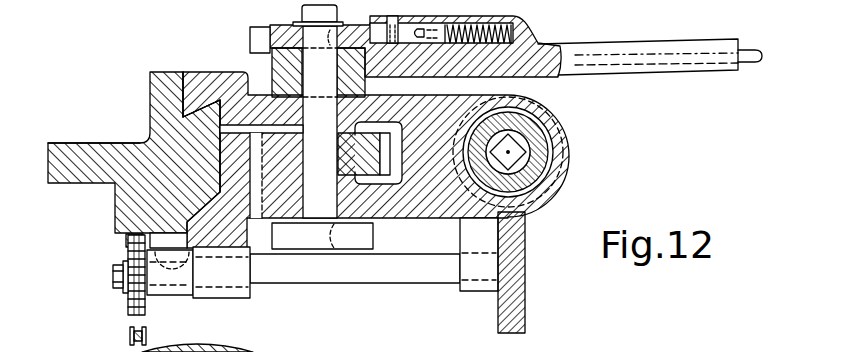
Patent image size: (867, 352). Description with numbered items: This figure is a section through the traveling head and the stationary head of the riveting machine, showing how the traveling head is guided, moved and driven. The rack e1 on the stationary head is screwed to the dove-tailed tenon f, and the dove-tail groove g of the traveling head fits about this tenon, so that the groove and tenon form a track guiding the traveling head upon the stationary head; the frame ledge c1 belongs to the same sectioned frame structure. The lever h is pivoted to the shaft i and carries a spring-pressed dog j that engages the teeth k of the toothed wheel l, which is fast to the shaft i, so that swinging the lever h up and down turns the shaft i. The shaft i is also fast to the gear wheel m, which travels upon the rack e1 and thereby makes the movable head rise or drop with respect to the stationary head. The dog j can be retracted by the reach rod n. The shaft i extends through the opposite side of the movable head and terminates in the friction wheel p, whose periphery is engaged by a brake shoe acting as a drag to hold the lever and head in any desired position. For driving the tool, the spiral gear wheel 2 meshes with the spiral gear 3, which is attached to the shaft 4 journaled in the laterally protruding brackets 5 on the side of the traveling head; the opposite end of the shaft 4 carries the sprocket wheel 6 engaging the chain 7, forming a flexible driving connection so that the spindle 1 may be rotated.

The dove-tailed tenon f is at (197, 138).
The frame ledge c1 is at (92, 129).
The dove-tail groove g is at (204, 100).
The teeth k is at (248, 37).
The toothed wheel l is at (272, 30).
The rack e1 is at (245, 157).
The shaft i is at (318, 111).
The spring-pressed dog j is at (398, 20).
The lever h is at (608, 33).
The reach rod n is at (753, 62).
The spindle 1 is at (518, 148).
The gear wheel 2 is at (573, 165).
The gear wheel m is at (376, 150).
The friction wheel p is at (362, 241).
The shaft 4 is at (436, 276).
The laterally protruding brackets 5 is at (248, 294).
The spiral gear 3 is at (523, 311).
The sprocket wheel 6 is at (130, 309).
The chain 7 is at (128, 337).